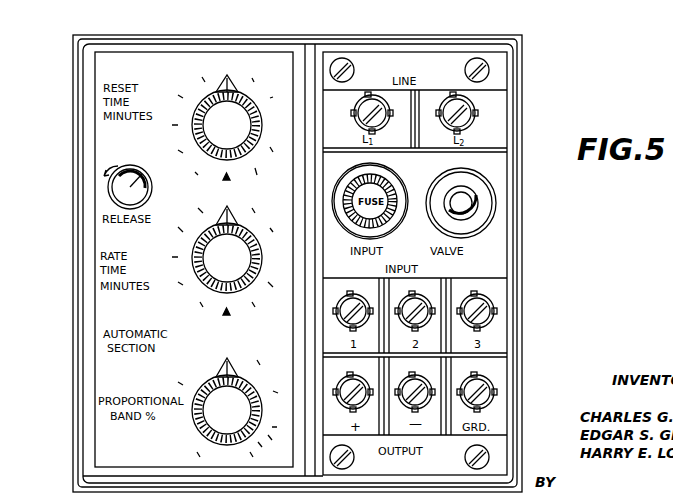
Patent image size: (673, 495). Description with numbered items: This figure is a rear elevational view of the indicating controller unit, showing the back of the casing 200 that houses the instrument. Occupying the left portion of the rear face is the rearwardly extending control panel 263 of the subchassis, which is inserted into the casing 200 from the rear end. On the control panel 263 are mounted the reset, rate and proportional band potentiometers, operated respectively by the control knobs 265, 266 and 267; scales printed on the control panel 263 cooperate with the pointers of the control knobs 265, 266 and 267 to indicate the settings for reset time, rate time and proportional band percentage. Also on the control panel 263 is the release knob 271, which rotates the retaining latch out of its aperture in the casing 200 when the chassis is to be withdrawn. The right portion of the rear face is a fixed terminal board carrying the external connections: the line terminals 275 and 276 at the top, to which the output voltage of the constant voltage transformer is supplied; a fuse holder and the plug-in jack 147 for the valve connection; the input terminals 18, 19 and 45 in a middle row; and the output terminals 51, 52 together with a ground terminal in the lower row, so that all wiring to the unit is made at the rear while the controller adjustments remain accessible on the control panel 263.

The casing 200 is at (236, 36).
The control panel 263 is at (91, 76).
The control knob 265 is at (243, 134).
The control knob 266 is at (243, 267).
The control knob 267 is at (243, 419).
The release knob 271 is at (148, 156).
The line terminal 275 is at (370, 96).
The line terminal 276 is at (455, 96).
The plug-in jack 147 is at (476, 196).
The input terminal 18 is at (361, 292).
The input terminal 19 is at (427, 298).
The input terminal 45 is at (490, 306).
The output terminal 51 is at (341, 394).
The output terminal 52 is at (422, 389).